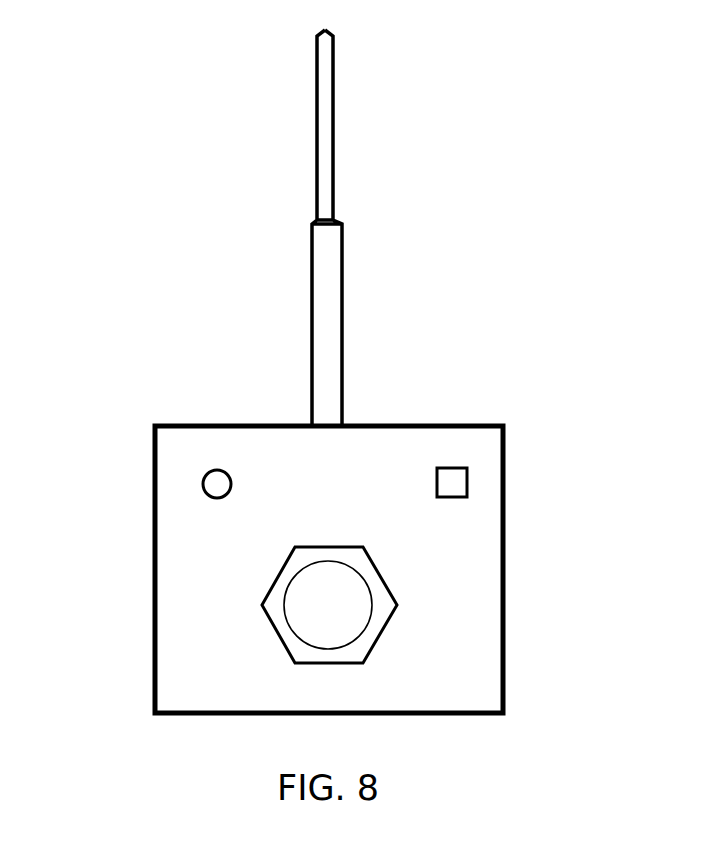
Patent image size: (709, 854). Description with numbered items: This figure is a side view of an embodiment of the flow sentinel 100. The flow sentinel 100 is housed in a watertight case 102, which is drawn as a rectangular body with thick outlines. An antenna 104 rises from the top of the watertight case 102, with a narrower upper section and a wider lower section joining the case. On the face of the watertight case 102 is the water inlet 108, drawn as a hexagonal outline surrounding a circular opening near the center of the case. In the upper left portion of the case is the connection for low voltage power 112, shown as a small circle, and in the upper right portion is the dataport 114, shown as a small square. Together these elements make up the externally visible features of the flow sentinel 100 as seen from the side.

The flow sentinel 100 is at (359, 371).
The watertight case 102 is at (265, 569).
The antenna 104 is at (383, 228).
The water inlet 108 is at (212, 605).
The connection for low voltage power 112 is at (129, 466).
The dataport 114 is at (563, 472).